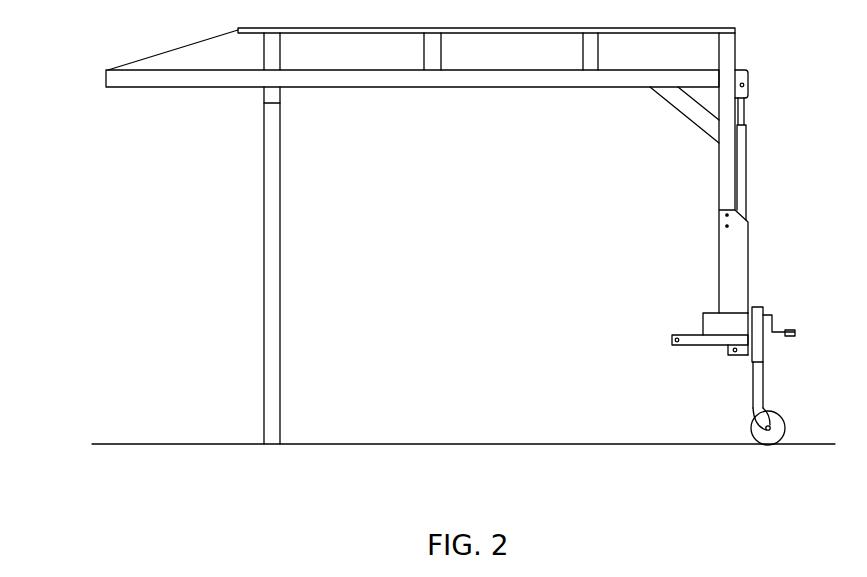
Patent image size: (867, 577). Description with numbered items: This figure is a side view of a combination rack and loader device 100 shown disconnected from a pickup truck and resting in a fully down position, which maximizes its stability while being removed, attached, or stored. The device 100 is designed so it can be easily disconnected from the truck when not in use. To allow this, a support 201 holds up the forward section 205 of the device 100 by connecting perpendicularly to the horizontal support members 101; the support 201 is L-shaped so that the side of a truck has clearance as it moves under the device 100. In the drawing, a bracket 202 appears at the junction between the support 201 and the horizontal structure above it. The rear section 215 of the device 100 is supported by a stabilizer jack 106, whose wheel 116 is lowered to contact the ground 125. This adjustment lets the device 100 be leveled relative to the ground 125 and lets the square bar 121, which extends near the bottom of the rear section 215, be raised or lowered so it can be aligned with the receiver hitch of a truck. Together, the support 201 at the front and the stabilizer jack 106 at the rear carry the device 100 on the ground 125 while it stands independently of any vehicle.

The combination rack and loader device 100 is at (106, 73).
The horizontal support members 101 is at (466, 78).
The forward section 205 is at (183, 80).
The post bracket 202 is at (272, 97).
The support 201 is at (264, 270).
The rear section 215 is at (735, 47).
The square bar 121 is at (697, 347).
The stabilizer jack 106 is at (763, 348).
The wheel 116 is at (784, 416).
The ground 125 is at (477, 444).